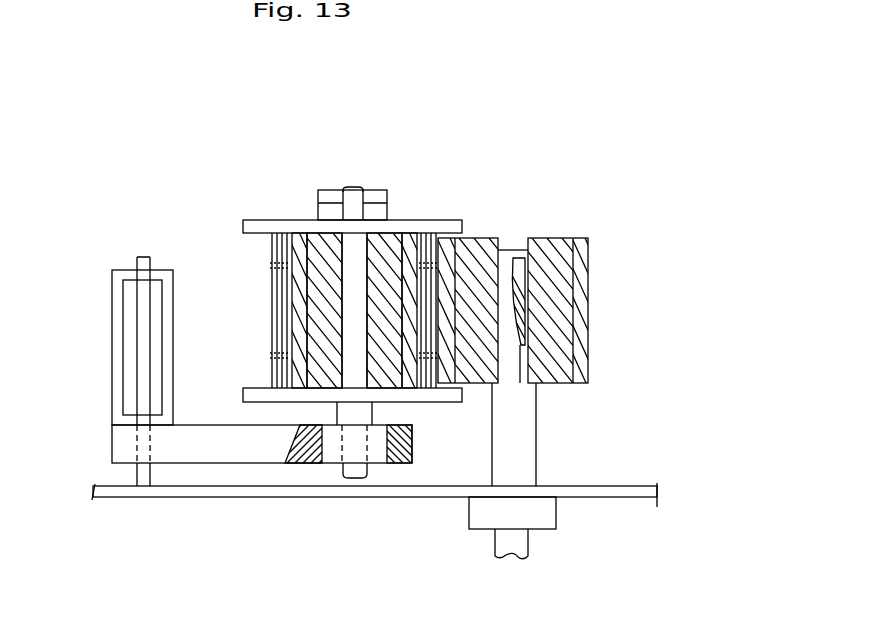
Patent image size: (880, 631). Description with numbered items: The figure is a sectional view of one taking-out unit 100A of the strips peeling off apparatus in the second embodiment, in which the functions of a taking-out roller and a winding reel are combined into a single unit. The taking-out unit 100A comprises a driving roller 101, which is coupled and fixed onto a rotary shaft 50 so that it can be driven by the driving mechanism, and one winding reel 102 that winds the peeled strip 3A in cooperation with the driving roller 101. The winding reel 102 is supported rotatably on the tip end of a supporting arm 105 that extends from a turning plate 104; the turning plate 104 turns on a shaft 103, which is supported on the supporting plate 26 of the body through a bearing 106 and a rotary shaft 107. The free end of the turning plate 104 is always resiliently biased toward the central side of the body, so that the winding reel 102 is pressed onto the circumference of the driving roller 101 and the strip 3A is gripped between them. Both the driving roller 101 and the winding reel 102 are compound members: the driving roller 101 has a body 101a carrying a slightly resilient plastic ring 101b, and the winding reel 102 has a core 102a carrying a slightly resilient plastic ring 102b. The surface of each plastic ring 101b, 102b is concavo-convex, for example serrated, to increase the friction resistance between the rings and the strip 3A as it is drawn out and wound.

The taking-out unit 100A is at (838, 130).
The strip 3A is at (488, 232).
The driving roller 101 is at (600, 262).
The yoke body 101a is at (553, 307).
The plastic ring 101b is at (583, 350).
The winding reel 102 is at (274, 210).
The core 102a is at (317, 270).
The plastic ring 102b is at (297, 318).
The shaft 103 is at (135, 258).
The turning plate 104 is at (112, 363).
The supporting arm 105 is at (193, 445).
The bearing 106 is at (330, 457).
The rotary shaft 107 is at (352, 187).
The supporting plate 26 is at (628, 488).
The rotary shaft 50 is at (527, 455).